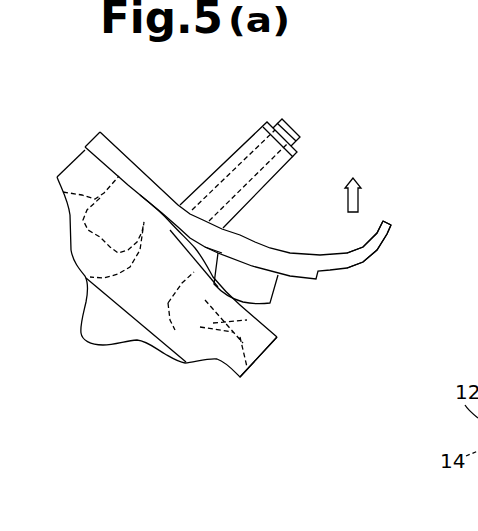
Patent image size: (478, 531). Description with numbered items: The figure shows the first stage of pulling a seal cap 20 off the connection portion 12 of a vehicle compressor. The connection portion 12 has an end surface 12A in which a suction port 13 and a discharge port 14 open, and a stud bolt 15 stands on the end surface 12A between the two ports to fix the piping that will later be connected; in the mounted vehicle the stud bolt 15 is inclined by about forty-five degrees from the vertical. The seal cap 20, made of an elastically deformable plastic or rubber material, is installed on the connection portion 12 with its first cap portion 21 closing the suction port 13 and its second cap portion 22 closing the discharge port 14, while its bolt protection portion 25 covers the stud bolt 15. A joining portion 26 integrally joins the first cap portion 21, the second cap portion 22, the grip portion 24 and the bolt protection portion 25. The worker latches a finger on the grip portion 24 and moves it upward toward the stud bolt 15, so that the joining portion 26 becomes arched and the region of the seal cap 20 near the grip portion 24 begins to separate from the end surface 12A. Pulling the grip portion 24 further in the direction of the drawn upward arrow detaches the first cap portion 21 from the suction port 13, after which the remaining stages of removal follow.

The connection portion 12 is at (65, 168).
The end surface 12A is at (268, 328).
The suction port 13 is at (246, 373).
The discharge port 14 is at (63, 191).
The stud bolt 15 is at (300, 123).
The seal cap 20 is at (128, 156).
The first cap portion 21 is at (279, 293).
The second cap portion 22 is at (84, 278).
The grip portion 24 is at (377, 239).
The bolt protection portion 25 is at (234, 152).
The joining portion 26 is at (255, 243).